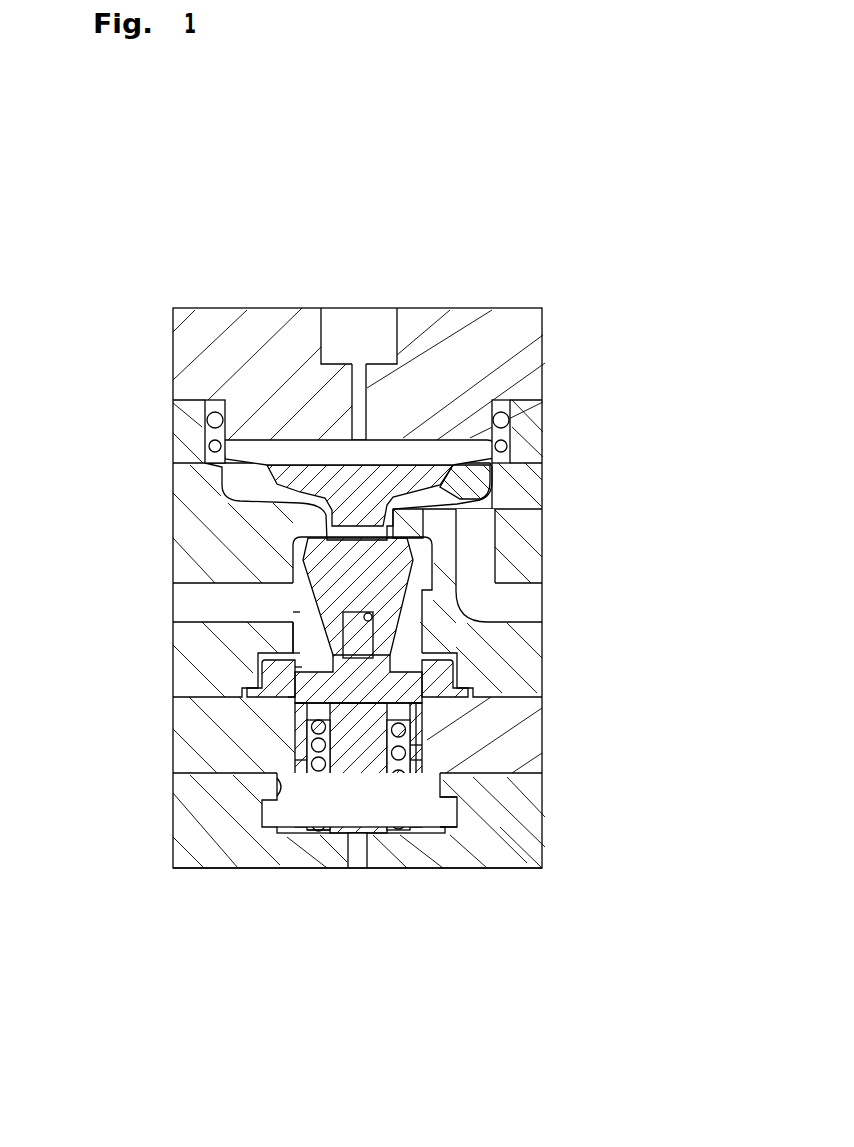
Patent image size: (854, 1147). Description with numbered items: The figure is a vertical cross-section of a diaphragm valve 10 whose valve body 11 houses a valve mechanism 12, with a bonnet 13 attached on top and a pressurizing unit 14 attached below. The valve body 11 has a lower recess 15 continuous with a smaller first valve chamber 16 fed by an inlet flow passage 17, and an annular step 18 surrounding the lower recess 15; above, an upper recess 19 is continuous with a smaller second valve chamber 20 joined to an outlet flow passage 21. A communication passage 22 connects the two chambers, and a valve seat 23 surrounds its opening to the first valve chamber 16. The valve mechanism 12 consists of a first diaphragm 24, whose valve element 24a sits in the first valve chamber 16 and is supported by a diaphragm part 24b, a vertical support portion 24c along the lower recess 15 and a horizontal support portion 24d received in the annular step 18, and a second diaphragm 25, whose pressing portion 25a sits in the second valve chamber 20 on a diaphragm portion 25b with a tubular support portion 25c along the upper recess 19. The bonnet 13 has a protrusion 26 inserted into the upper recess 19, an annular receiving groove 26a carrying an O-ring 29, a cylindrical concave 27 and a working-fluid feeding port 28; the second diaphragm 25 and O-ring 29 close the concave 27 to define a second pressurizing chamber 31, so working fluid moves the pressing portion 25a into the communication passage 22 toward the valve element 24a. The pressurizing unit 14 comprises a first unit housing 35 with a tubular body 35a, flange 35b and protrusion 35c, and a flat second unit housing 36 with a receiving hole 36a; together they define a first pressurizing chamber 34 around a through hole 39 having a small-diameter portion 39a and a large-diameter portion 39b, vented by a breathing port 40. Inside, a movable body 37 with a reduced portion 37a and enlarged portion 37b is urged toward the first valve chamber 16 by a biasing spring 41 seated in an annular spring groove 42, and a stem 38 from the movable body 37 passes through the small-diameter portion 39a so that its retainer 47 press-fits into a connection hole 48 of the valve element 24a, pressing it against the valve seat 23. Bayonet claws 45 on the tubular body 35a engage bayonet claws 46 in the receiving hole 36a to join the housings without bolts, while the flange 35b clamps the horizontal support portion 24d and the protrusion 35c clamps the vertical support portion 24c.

The diaphragm valve 10 is at (552, 229).
The valve body 11 is at (225, 530).
The valve mechanism 12 is at (395, 518).
The bonnet 13 is at (297, 325).
The pressurizing unit 14 is at (527, 867).
The lower recess 15 is at (362, 745).
The first valve chamber 16 is at (353, 570).
The inlet flow passage 17 is at (182, 600).
The annular step 18 is at (455, 698).
The upper recess 19 is at (205, 450).
The second valve chamber 20 is at (470, 490).
The outlet flow passage 21 is at (505, 600).
The communication passage 22 is at (280, 502).
The valve seat 23 is at (470, 546).
The first diaphragm 24 is at (82, 603).
The valve element 24a is at (292, 616).
The diaphragm part 24b is at (300, 653).
The vertical support portion 24c is at (302, 668).
The horizontal support portion 24d is at (302, 698).
The second diaphragm 25 is at (635, 322).
The pressing portion 25a is at (505, 415).
The diaphragm portion 25b is at (508, 468).
The tubular support portion 25c is at (505, 440).
The protrusion 26 is at (262, 418).
The annular receiving groove 26a is at (225, 425).
The cylindrical concave 27 is at (398, 440).
The working-fluid feeding port 28 is at (360, 340).
The O-ring 29 is at (208, 418).
The second pressurizing chamber 31 is at (373, 452).
The first pressurizing chamber 34 is at (353, 712).
The first unit housing 35 is at (715, 718).
The tubular body 35a is at (440, 767).
The flange 35b is at (437, 757).
The protrusion 35c is at (435, 748).
The second unit housing 36 is at (488, 848).
The receiving hole 36a is at (276, 833).
The movable body 37 is at (82, 758).
The reduced portion 37a is at (295, 757).
The enlarged portion 37b is at (295, 788).
The stem 38 is at (415, 658).
The through hole 39 is at (637, 810).
The small-diameter portion 39a is at (465, 780).
The large-diameter portion 39b is at (455, 806).
The breathing port 40 is at (358, 852).
The biasing spring 41 is at (304, 832).
The annular spring groove 42 is at (327, 832).
The bayonet claws 45 is at (447, 832).
The bayonet claws 46 is at (280, 805).
The retainer 47 is at (369, 621).
The connection hole 48 is at (373, 619).